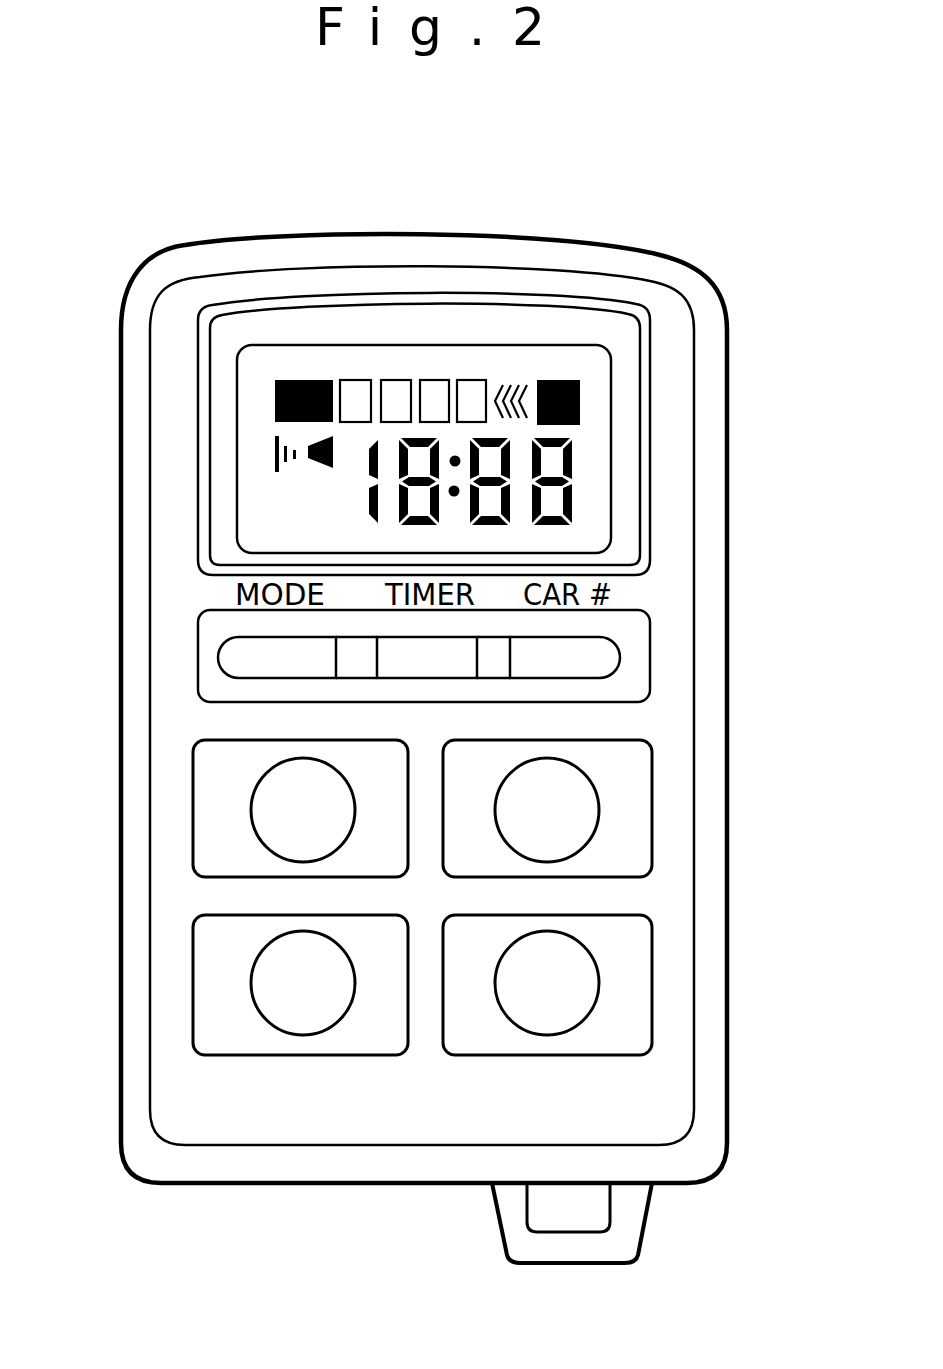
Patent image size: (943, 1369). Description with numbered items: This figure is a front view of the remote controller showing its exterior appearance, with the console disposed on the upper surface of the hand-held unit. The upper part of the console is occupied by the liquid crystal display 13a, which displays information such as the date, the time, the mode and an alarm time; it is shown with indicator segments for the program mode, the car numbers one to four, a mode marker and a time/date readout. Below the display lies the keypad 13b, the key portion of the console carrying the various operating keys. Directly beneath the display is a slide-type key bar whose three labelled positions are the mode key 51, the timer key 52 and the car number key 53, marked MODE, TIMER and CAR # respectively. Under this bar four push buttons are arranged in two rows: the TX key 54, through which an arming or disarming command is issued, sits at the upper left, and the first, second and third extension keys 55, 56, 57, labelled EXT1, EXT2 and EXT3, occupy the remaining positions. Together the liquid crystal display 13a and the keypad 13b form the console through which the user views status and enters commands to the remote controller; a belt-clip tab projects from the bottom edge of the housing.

The liquid crystal display 13a is at (652, 490).
The keypad 13b is at (673, 900).
The mode key 51 is at (232, 660).
The timer key 52 is at (446, 668).
The car number key 53 is at (600, 657).
The TX key 54 is at (251, 822).
The first extension key 55 is at (251, 995).
The second extension key 56 is at (599, 818).
The third extension key 57 is at (599, 985).